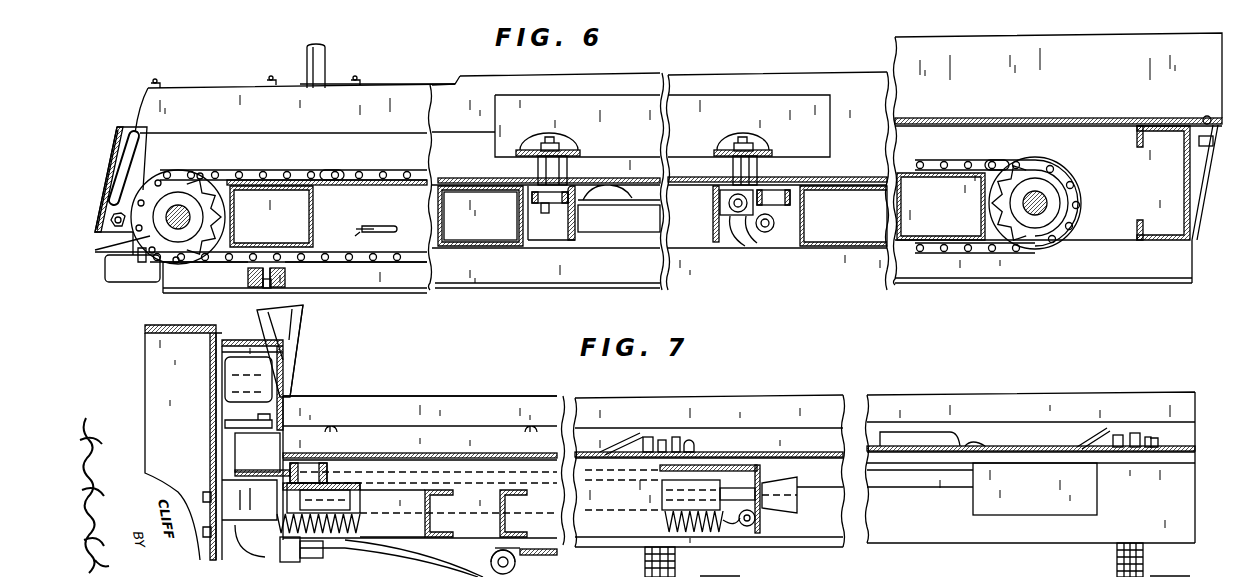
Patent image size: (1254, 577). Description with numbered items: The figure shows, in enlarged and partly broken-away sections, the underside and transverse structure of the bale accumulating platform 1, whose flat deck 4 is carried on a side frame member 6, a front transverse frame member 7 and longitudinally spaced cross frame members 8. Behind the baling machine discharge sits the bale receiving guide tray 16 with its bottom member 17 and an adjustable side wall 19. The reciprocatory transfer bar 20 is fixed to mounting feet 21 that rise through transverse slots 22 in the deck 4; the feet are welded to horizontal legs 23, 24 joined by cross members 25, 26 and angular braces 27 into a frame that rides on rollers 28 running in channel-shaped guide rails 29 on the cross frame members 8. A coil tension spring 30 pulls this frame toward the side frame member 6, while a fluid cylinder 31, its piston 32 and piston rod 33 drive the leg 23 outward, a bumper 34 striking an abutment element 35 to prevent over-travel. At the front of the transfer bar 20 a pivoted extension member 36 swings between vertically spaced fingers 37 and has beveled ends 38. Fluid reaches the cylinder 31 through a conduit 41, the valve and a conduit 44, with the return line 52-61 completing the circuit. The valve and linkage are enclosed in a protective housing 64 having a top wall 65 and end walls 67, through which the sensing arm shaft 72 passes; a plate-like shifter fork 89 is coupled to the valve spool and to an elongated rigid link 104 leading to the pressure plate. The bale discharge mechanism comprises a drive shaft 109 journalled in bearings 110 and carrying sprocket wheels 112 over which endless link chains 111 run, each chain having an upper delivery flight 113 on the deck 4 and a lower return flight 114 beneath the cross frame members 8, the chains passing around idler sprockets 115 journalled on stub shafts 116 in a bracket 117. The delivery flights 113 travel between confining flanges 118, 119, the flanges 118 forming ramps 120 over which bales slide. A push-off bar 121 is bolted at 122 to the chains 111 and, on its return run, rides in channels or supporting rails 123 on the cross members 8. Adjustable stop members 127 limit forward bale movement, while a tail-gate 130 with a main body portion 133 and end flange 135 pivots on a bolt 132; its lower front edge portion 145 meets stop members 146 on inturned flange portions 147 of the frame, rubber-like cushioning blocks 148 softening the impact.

In FIG. 6, the platform 1 is at (844, 158).
In FIG. 6, the deck 4 is at (304, 178).
In FIG. 7, the deck 4 is at (427, 452).
In FIG. 6, the side frame member 6 is at (665, 209).
In FIG. 7, the side frame member 6 is at (210, 441).
In FIG. 6, the front transverse frame member 7 is at (1190, 186).
In FIG. 7, the front transverse frame member 7 is at (867, 410).
In FIG. 6, the cross frame members 8 is at (311, 209).
In FIG. 7, the cross frame members 8 is at (1031, 482).
In FIG. 6, the bale receiving guide tray 16 is at (1105, 33).
In FIG. 7, the bale receiving guide tray 16 is at (305, 318).
In FIG. 6, the bottom member 17 is at (1060, 118).
In FIG. 7, the bottom member 17 is at (423, 395).
In FIG. 6, the side wall 19 is at (1050, 64).
In FIG. 7, the side wall 19 is at (303, 346).
In FIG. 6, the transfer bar 20 is at (682, 110).
In FIG. 7, the transfer bar 20 is at (276, 374).
In FIG. 6, the mounting feet 21 is at (575, 161).
In FIG. 7, the mounting feet 21 is at (238, 456).
In FIG. 6, the transverse slots 22 is at (568, 173).
In FIG. 7, the transverse slots 22 is at (470, 452).
In FIG. 6, the leg 23 is at (733, 226).
In FIG. 7, the leg 23 is at (622, 490).
In FIG. 6, the leg 24 is at (572, 239).
In FIG. 7, the cross member 25 is at (762, 534).
In FIG. 6, the cross member 26 is at (619, 216).
In FIG. 7, the cross member 26 is at (500, 501).
In FIG. 7, the angular braces 27 is at (392, 513).
In FIG. 6, the rollers 28 is at (546, 206).
In FIG. 7, the rollers 28 is at (300, 468).
In FIG. 6, the guide rails 29 is at (521, 222).
In FIG. 7, the guide rails 29 is at (830, 485).
In FIG. 6, the coil tension spring 30 is at (765, 233).
In FIG. 7, the coil tension spring 30 is at (360, 527).
In FIG. 6, the fluid cylinder 31 is at (720, 204).
In FIG. 7, the fluid cylinder 31 is at (352, 490).
In FIG. 7, the piston 32 is at (328, 488).
In FIG. 6, the piston rod 33 is at (731, 208).
In FIG. 7, the piston rod 33 is at (322, 556).
In FIG. 7, the bumper 34 is at (785, 480).
In FIG. 7, the abutment element 35 is at (1010, 497).
In FIG. 7, the extension member 36 is at (285, 386).
In FIG. 7, the fingers 37 is at (210, 351).
In FIG. 7, the beveled ends 38 is at (240, 377).
In FIG. 7, the conduit 41 is at (516, 562).
In FIG. 7, the conduit 44 is at (437, 556).
In FIG. 7, the return line 52-61 is at (506, 550).
In FIG. 6, the protective housing 64 is at (323, 108).
In FIG. 6, the top wall 65 is at (368, 84).
In FIG. 6, the end walls 67 is at (146, 99).
In FIG. 6, the shaft 72 is at (307, 63).
In FIG. 6, the shifter fork 89 is at (360, 230).
In FIG. 6, the link 104 is at (382, 227).
In FIG. 6, the drive shaft 109 is at (182, 208).
In FIG. 6, the bearings 110 is at (222, 185).
In FIG. 6, the link chains 111 is at (353, 170).
In FIG. 7, the link chains 111 is at (679, 434).
In FIG. 6, the sprocket wheels 112 is at (235, 214).
In FIG. 6, the upper delivery flight 113 is at (330, 171).
In FIG. 7, the upper delivery flight 113 is at (661, 438).
In FIG. 6, the lower return flight 114 is at (392, 263).
In FIG. 7, the lower return flight 114 is at (647, 566).
In FIG. 6, the idler sprockets 115 is at (1061, 183).
In FIG. 7, the idler sprockets 115 is at (677, 563).
In FIG. 6, the stub shafts 116 is at (1048, 204).
In FIG. 6, the bracket 117 is at (975, 259).
In FIG. 7, the confining flange 118 is at (647, 436).
In FIG. 7, the confining flange 119 is at (692, 441).
In FIG. 7, the ramps 120 is at (637, 435).
In FIG. 6, the push-off bar 121 is at (246, 277).
In FIG. 7, the push-off bar 121 is at (966, 563).
In FIG. 6, the bolted connection 122 is at (266, 288).
In FIG. 6, the supporting rails 123 is at (503, 288).
In FIG. 7, the supporting rails 123 is at (548, 551).
In FIG. 7, the stop members 127 is at (925, 437).
In FIG. 6, the tail-gate 130 is at (114, 131).
In FIG. 6, the pivot bolt 132 is at (112, 219).
In FIG. 6, the main body portion 133 is at (118, 146).
In FIG. 6, the end flange 135 is at (107, 165).
In FIG. 6, the lower front edge portion 145 is at (95, 253).
In FIG. 6, the stop members 146 is at (130, 256).
In FIG. 6, the inturned flange portions 147 is at (128, 242).
In FIG. 6, the cushioning blocks 148 is at (141, 262).